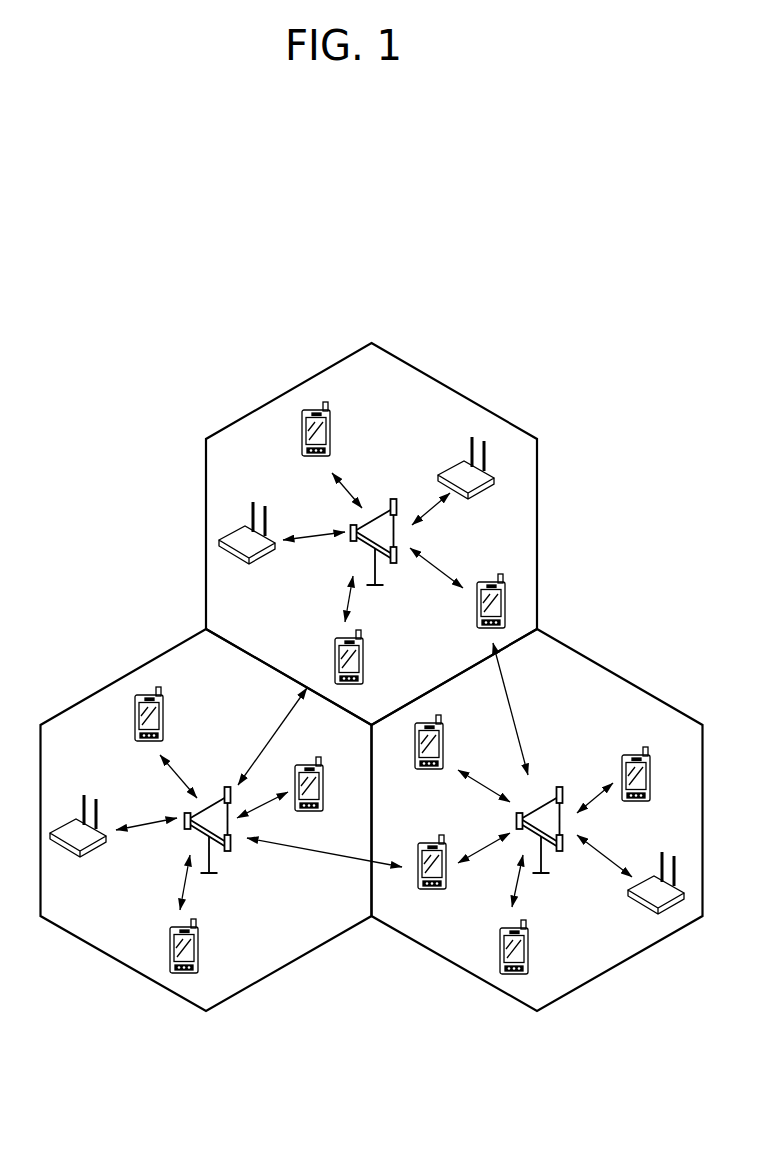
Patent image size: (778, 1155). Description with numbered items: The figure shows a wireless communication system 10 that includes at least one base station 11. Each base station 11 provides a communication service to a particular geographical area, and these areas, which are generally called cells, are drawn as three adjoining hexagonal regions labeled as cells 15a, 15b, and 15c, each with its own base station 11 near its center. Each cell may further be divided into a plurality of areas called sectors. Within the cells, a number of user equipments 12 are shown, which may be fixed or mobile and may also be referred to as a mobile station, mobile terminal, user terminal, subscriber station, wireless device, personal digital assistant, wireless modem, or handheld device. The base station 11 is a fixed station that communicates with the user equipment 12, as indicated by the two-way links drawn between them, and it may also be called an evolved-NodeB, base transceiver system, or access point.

The wireless communication system 10 is at (609, 442).
The base station 11 is at (383, 510).
The user equipment 12 is at (332, 433).
The cell 15a is at (537, 522).
The cell 15b is at (640, 687).
The cell 15c is at (102, 687).